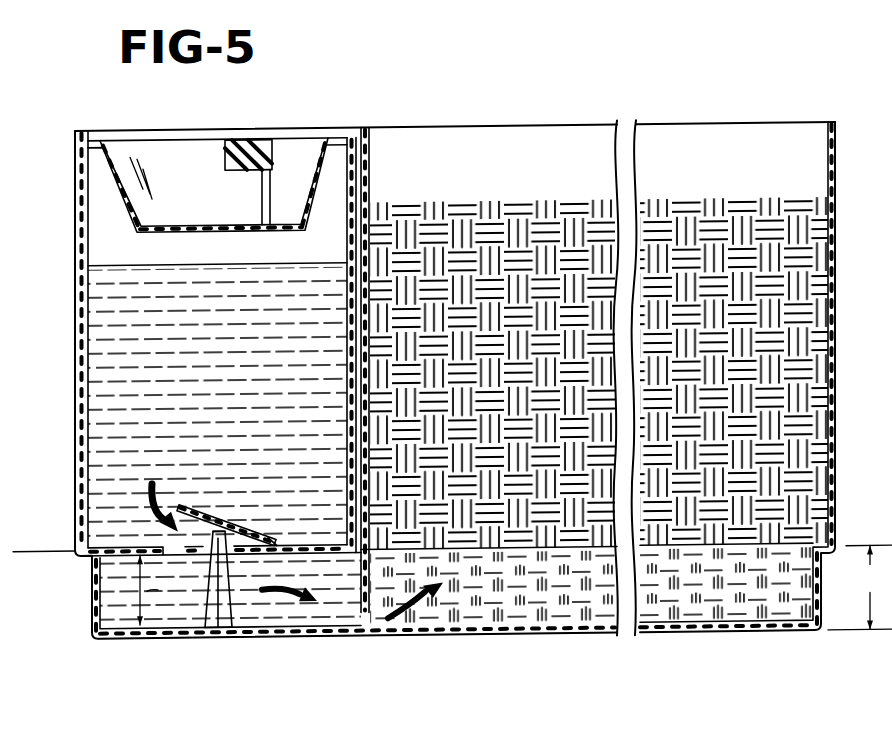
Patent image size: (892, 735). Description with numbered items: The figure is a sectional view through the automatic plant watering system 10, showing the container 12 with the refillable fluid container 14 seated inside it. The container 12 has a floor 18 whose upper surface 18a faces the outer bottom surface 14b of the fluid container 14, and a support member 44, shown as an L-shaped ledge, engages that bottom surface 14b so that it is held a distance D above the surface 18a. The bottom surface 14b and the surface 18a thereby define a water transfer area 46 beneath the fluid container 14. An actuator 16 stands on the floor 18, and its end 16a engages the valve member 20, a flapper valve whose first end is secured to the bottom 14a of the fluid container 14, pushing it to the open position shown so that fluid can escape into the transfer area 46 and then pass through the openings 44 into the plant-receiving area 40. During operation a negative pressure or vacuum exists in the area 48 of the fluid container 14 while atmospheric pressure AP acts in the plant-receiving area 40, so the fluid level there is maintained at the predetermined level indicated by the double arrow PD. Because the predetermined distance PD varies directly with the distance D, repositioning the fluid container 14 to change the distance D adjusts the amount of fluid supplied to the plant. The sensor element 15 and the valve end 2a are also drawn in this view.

The automatic plant watering system 10 is at (124, 129).
The container 12 is at (834, 294).
The fluid container 14 is at (85, 347).
The bottom of fluid container 14a is at (86, 492).
The outer bottom surface 14b is at (113, 625).
The sensor 15 is at (256, 142).
The actuator 16 is at (197, 614).
The end of actuator 16a is at (232, 520).
The floor 18 is at (517, 636).
The surface of bottom 18a is at (272, 624).
The valve member 20 is at (214, 530).
The flap end 2a is at (280, 540).
The plant-receiving area 40 is at (689, 175).
The support member 44 is at (352, 630).
The water transfer area 46 is at (247, 622).
The area of fluid container 48 is at (112, 226).
The atmospheric pressure AP is at (465, 200).
The distance D is at (157, 590).
The predetermined distance PD is at (860, 587).